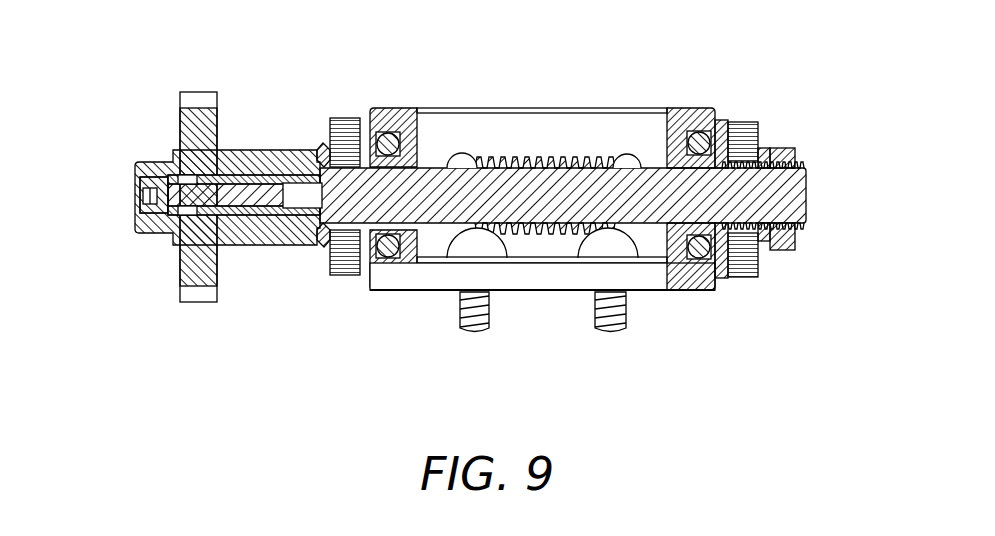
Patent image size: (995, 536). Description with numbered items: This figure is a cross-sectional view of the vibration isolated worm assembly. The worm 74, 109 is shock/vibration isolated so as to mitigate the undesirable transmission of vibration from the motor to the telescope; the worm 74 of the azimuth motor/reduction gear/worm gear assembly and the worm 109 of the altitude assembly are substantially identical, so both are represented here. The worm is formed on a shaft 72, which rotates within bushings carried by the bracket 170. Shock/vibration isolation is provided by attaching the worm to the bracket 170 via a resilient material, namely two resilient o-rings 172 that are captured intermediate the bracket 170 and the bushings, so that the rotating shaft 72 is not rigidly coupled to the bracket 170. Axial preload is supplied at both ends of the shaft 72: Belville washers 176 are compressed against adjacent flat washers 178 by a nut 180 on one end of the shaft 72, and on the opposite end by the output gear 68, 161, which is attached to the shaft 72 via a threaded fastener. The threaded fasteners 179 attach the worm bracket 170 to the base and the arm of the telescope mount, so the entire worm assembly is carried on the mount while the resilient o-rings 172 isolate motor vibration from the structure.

The output gear 68 is at (227, 161).
The output gear 161 is at (200, 92).
The shaft 72 is at (510, 189).
The worm 74 is at (545, 177).
The worm 109 is at (598, 155).
The bracket 170 is at (408, 108).
The resilient o-rings 172 is at (703, 140).
The Belville washers 176 is at (150, 196).
The flat washers 178 is at (742, 270).
The mounting screws 179 is at (480, 334).
The nut 180 is at (787, 250).